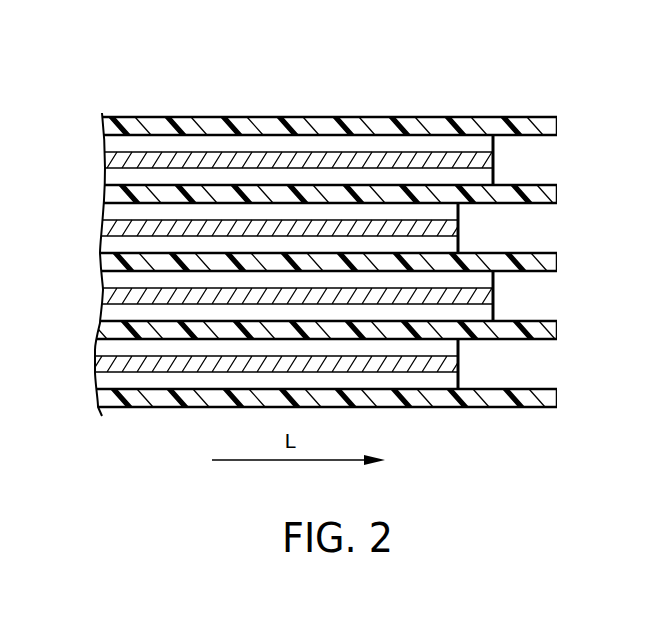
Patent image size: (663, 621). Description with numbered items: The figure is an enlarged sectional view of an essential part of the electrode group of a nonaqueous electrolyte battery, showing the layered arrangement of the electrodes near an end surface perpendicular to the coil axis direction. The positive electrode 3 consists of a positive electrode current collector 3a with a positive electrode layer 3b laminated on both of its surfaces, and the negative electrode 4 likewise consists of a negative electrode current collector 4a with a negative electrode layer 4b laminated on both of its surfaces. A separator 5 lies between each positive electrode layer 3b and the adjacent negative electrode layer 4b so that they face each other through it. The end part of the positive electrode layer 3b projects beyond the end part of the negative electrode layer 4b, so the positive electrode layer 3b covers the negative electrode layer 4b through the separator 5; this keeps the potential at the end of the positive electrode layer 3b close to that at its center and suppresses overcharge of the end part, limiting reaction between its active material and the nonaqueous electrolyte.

The positive electrode 3 is at (493, 61).
The positive electrode current collector 3a is at (436, 165).
The positive electrode layer 3b is at (400, 143).
The negative electrode 4 is at (605, 188).
The negative electrode current collector 4a is at (458, 228).
The negative electrode layer 4b is at (458, 213).
The separator 5 is at (557, 127).